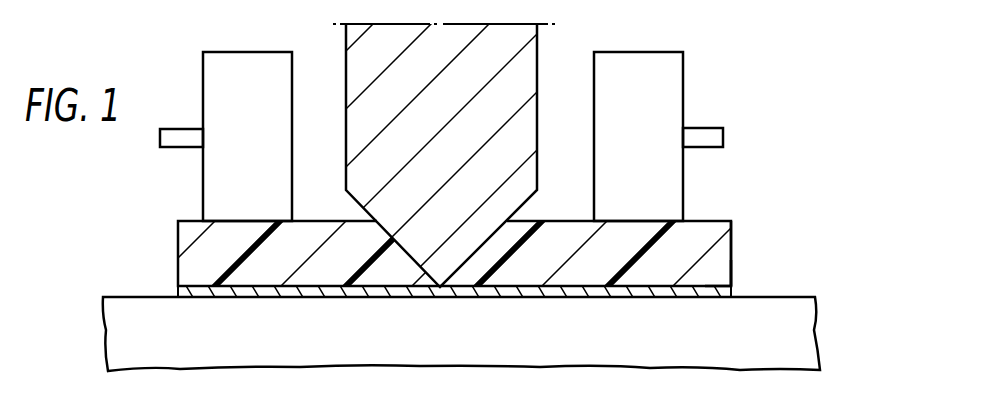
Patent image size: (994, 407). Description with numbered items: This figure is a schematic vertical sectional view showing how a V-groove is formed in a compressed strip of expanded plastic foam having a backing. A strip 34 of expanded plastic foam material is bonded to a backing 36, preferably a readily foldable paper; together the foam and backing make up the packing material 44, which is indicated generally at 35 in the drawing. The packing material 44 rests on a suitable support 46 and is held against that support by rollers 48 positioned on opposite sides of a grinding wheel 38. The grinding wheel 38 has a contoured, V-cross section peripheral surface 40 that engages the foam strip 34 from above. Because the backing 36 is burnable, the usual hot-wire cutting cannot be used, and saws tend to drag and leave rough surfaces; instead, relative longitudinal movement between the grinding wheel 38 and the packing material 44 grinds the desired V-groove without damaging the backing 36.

The strip of expanded plastic foam material 34 is at (725, 236).
The adhesive laminate layer 35 is at (162, 256).
The backing 36 is at (633, 289).
The grinding wheel 38 is at (520, 77).
The contoured V-cross section peripheral surface 40 is at (467, 262).
The packing material 44 is at (748, 280).
The support 46 is at (303, 340).
The rollers 48 is at (216, 69).